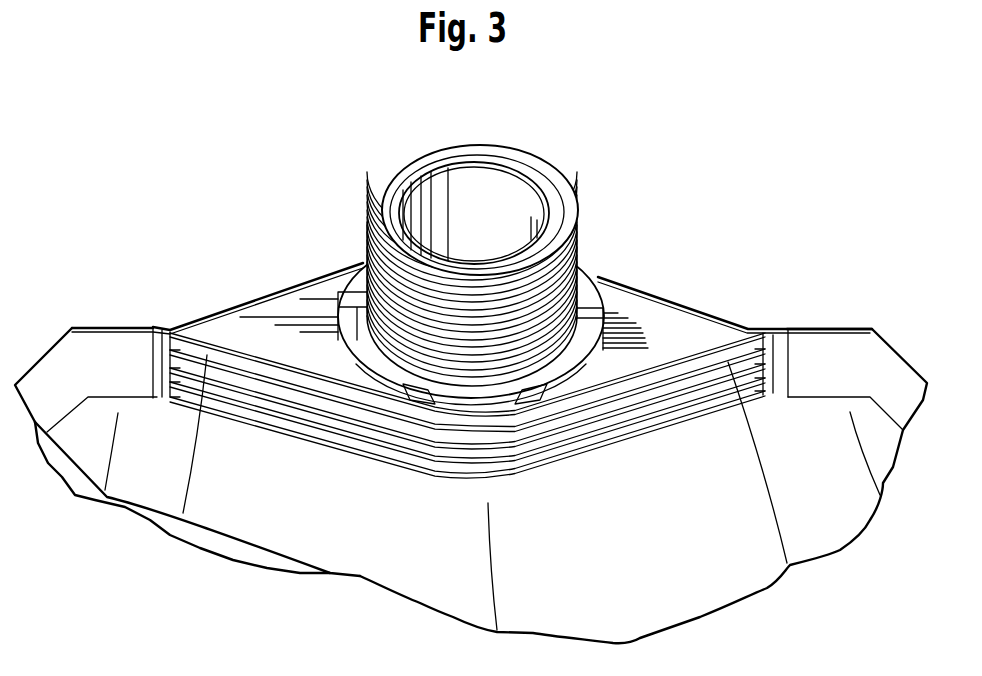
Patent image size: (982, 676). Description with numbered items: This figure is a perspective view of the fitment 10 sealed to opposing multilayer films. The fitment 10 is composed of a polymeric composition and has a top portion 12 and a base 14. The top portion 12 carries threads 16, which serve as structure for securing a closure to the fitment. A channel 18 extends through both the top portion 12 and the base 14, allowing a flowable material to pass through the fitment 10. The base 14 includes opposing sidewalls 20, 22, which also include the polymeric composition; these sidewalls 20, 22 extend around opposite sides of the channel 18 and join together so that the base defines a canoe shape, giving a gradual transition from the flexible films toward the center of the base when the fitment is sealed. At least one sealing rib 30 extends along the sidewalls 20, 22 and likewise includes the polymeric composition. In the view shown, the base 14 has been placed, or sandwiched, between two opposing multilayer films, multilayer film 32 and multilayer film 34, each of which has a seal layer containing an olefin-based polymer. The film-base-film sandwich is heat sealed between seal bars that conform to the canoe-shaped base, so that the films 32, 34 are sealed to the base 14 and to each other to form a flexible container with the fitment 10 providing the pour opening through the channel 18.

The fitment 10 is at (657, 137).
The top portion 12 is at (596, 236).
The base 14 is at (684, 287).
The threads 16 is at (343, 340).
The channel 18 is at (446, 185).
The sidewall 20 is at (183, 327).
The sidewall 22 is at (300, 305).
The sealing rib 30 is at (230, 402).
The multilayer film 32 is at (255, 300).
The multilayer film 34 is at (286, 358).